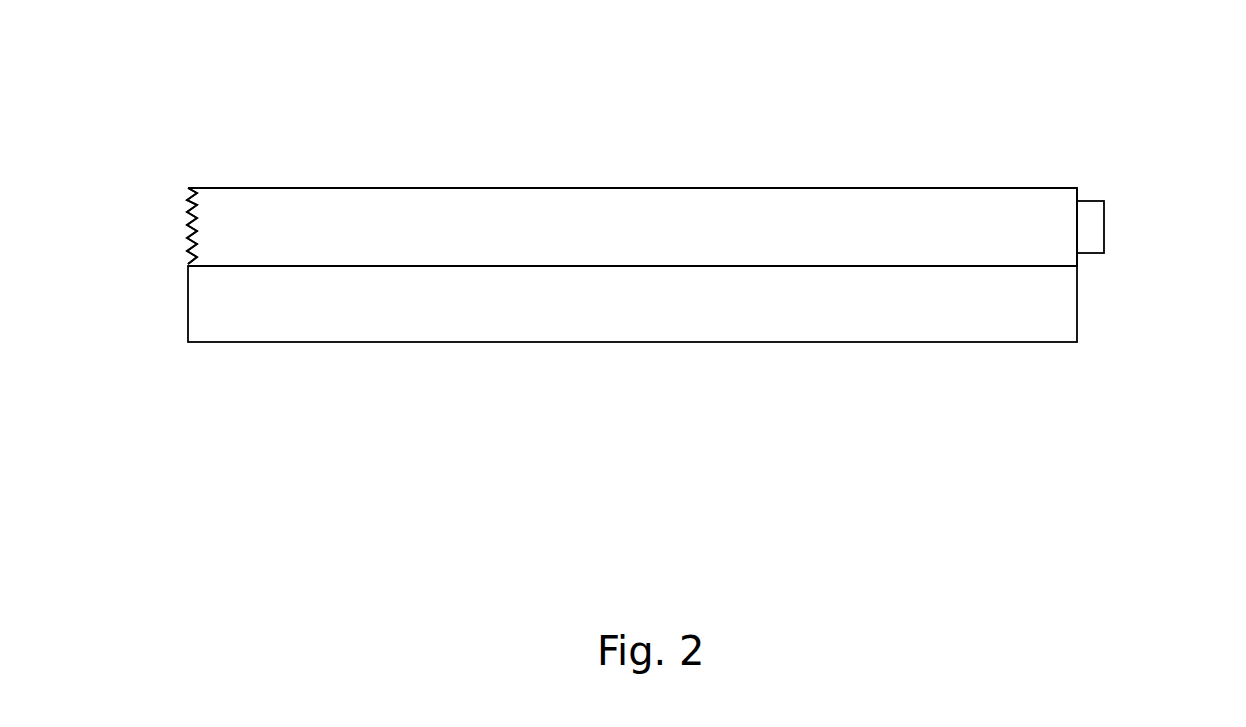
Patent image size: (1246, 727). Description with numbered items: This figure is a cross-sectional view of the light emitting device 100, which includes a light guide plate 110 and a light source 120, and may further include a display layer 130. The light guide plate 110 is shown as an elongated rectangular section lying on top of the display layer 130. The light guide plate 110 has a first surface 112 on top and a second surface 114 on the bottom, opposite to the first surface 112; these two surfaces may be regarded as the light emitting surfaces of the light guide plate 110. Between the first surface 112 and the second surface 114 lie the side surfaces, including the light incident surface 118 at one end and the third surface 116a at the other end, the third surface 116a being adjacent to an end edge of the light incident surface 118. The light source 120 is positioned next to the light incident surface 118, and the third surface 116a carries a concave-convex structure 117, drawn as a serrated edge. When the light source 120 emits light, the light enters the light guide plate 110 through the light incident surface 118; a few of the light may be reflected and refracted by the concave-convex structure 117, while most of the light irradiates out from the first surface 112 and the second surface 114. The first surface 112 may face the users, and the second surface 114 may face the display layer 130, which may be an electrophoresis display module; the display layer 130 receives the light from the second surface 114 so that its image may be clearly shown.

The light emitting device 100 is at (117, 66).
The light guide plate 110 is at (366, 198).
The first surface 112 is at (620, 189).
The second surface 114 is at (670, 268).
The third surface 116a is at (199, 205).
The concave-convex structure 117 is at (187, 222).
The light incident surface 118 is at (1073, 207).
The light source 120 is at (1094, 228).
The display layer 130 is at (370, 320).